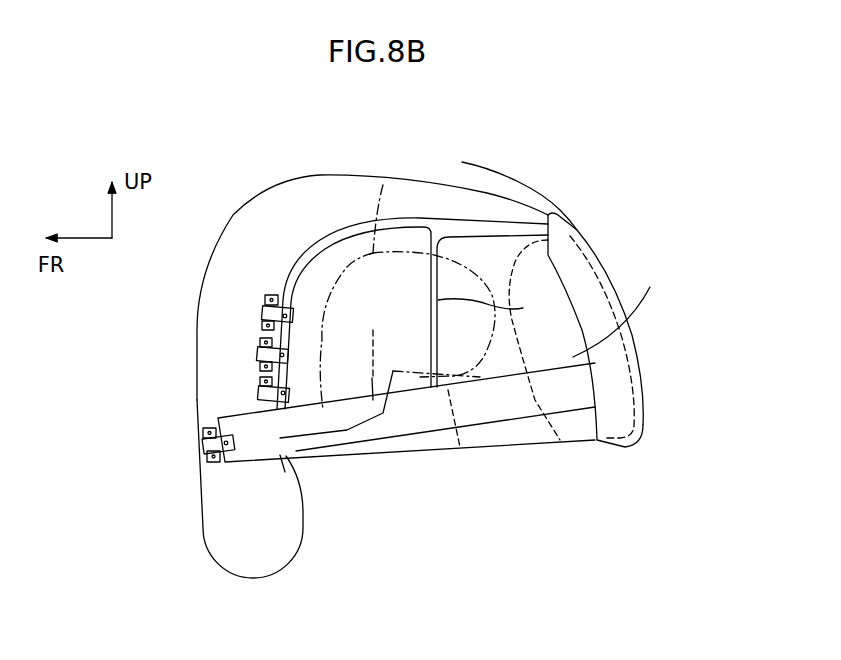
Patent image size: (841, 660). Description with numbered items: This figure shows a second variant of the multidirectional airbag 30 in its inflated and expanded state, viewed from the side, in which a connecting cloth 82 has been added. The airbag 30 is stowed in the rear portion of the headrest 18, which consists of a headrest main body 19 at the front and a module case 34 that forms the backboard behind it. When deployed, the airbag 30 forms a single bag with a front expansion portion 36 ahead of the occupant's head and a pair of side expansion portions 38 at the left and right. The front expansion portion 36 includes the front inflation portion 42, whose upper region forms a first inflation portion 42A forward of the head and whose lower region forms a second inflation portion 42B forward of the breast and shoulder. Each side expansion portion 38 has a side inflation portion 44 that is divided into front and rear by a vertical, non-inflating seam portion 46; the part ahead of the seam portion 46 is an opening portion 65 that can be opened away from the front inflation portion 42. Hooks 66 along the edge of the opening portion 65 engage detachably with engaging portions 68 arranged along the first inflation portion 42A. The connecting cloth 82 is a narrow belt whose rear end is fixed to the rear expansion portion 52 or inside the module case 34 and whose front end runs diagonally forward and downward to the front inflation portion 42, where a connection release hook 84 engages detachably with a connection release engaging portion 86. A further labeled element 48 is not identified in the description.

The headrest 18 is at (660, 197).
The headrest main body 19 is at (630, 328).
The multidirectional airbag 30 is at (252, 125).
The module case 34 is at (600, 262).
The front expansion portion 36 is at (250, 240).
The side expansion portion 38 is at (335, 262).
The front inflation portion 42 is at (108, 358).
The first inflation portion 42A is at (203, 353).
The second inflation portion 42B is at (215, 520).
The side inflation portion 44 is at (307, 290).
The seam portion 46 is at (495, 308).
The back board 48 is at (407, 203).
The rear expansion portion 52 is at (462, 162).
The opening portion 65 is at (372, 380).
The hook 66 is at (294, 355).
The engaging portion 68 is at (260, 343).
The connecting cloth 82 is at (493, 408).
The hook 84 is at (237, 443).
The engaging portion 86 is at (216, 462).